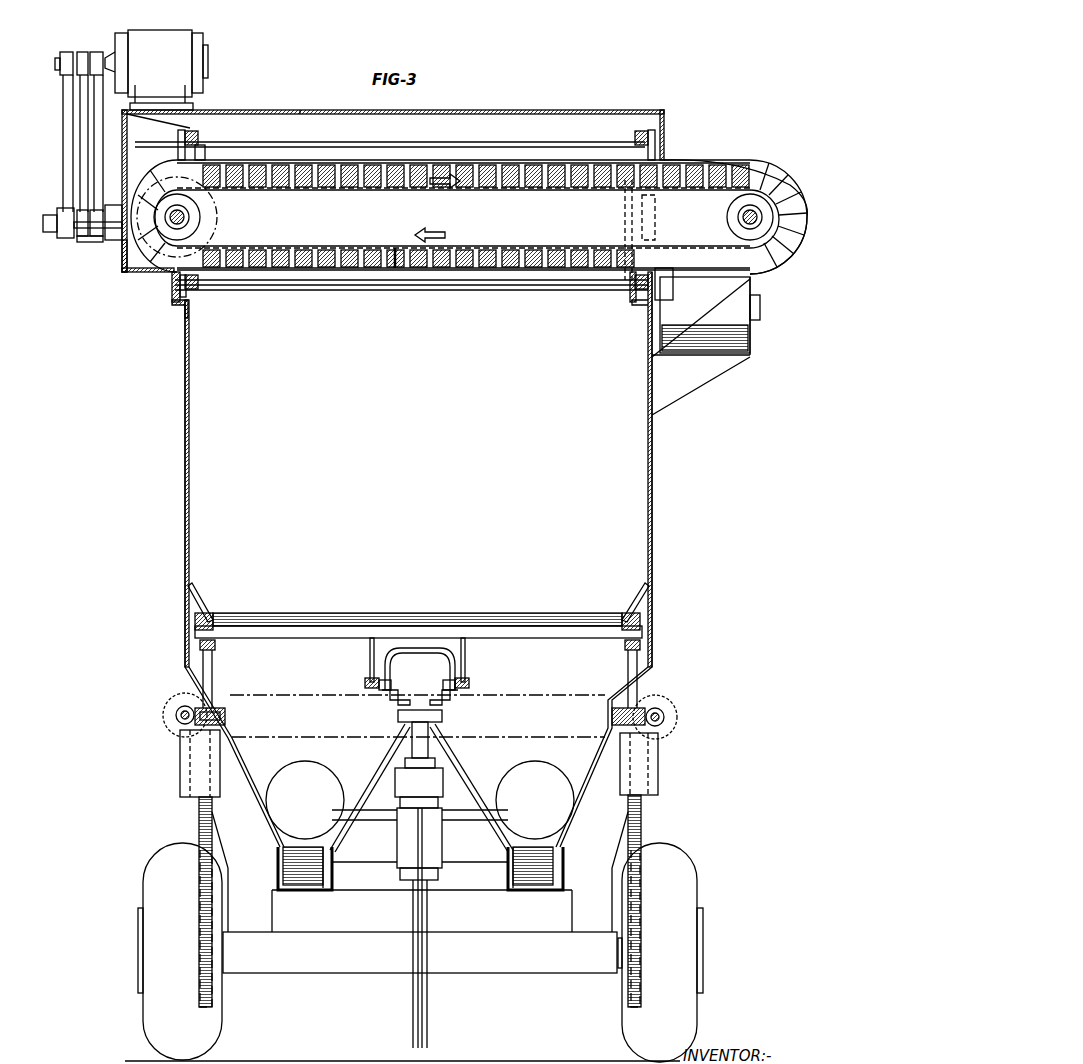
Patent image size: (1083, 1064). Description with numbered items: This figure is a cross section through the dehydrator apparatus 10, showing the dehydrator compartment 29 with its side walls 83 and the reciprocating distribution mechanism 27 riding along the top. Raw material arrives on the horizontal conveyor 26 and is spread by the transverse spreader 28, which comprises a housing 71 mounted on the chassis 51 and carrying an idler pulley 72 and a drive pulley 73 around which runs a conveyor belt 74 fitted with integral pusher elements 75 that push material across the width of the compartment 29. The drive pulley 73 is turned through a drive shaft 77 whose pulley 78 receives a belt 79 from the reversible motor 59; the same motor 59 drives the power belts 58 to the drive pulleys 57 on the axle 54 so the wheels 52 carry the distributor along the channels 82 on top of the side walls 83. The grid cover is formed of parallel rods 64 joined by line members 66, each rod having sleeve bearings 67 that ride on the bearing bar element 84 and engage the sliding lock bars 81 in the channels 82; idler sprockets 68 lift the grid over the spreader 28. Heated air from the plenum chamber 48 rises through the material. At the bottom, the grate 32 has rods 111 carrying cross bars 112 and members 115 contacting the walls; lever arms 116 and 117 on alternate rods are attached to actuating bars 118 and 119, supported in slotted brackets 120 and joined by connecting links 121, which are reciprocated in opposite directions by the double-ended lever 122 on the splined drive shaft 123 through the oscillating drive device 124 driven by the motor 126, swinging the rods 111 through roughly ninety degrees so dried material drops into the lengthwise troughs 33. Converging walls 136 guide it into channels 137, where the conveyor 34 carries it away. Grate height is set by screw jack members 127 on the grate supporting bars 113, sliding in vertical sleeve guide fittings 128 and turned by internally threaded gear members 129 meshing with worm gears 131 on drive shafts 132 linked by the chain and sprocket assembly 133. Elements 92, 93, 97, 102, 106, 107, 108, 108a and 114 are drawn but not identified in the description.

The dehydrator apparatus 10 is at (162, 395).
The horizontal conveyor 26 is at (715, 354).
The reciprocating distribution mechanism 27 is at (527, 108).
The transverse spreader 28 is at (403, 252).
The dehydrator compartment 29 is at (418, 469).
The grate 32 is at (480, 602).
The lengthwise troughs 33 is at (348, 785).
The conveyor 34 is at (326, 889).
The plenum chamber 48 is at (418, 723).
The chassis 51 is at (121, 254).
The wheels 52 is at (660, 215).
The axle 54 is at (76, 238).
The drive pulleys 57 is at (90, 242).
The power belts 58 is at (100, 156).
The reversible motor 59 is at (156, 70).
The parallel rods 64 is at (386, 136).
The line members 66 is at (195, 134).
The sleeve bearings 67 is at (178, 136).
The idler sprockets 68 is at (212, 148).
The housing 71 is at (434, 162).
The idler pulley 72 is at (736, 224).
The drive pulley 73 is at (192, 213).
The conveyor belt 74 is at (490, 190).
The pusher elements 75 is at (357, 186).
The drive shaft 77 is at (57, 217).
The pulley 78 is at (48, 236).
The belt 79 is at (63, 99).
The sliding lock bars 81 is at (180, 287).
The channels 82 is at (172, 284).
The side walls 83 is at (190, 448).
The bearing bar element 84 is at (188, 304).
The control box 92 is at (740, 329).
The strut 93 is at (678, 392).
The end cover 97 is at (772, 262).
The lower rail 102 is at (477, 290).
The top cover 106 is at (317, 106).
The curved cover 107 is at (758, 162).
The end wall 108 is at (140, 278).
The end wall 108a is at (623, 285).
The rods 111 is at (531, 638).
The cross bars 112 is at (333, 614).
The grate supporting bars 113 is at (215, 647).
The bracket 114 is at (195, 626).
The members 115 is at (200, 588).
The lever arm 116 is at (465, 660).
The lever arm 117 is at (370, 655).
The actuating bar 118 is at (460, 694).
The actuating bar 119 is at (374, 694).
The slotted brackets 120 is at (393, 657).
The connecting links 121 is at (390, 702).
The double-ended lever 122 is at (442, 716).
The splined drive shaft 123 is at (413, 912).
The oscillating drive device 124 is at (419, 783).
The motor 126 is at (442, 837).
The screw jack members 127 is at (194, 830).
The vertical sleeve guide fittings 128 is at (192, 760).
The internally threaded gear members 129 is at (225, 716).
The worm gears 131 is at (173, 708).
The drive shafts 132 is at (178, 722).
The chain and sprocket assembly 133 is at (302, 694).
The converging walls 136 is at (278, 756).
The channels 137 is at (312, 824).